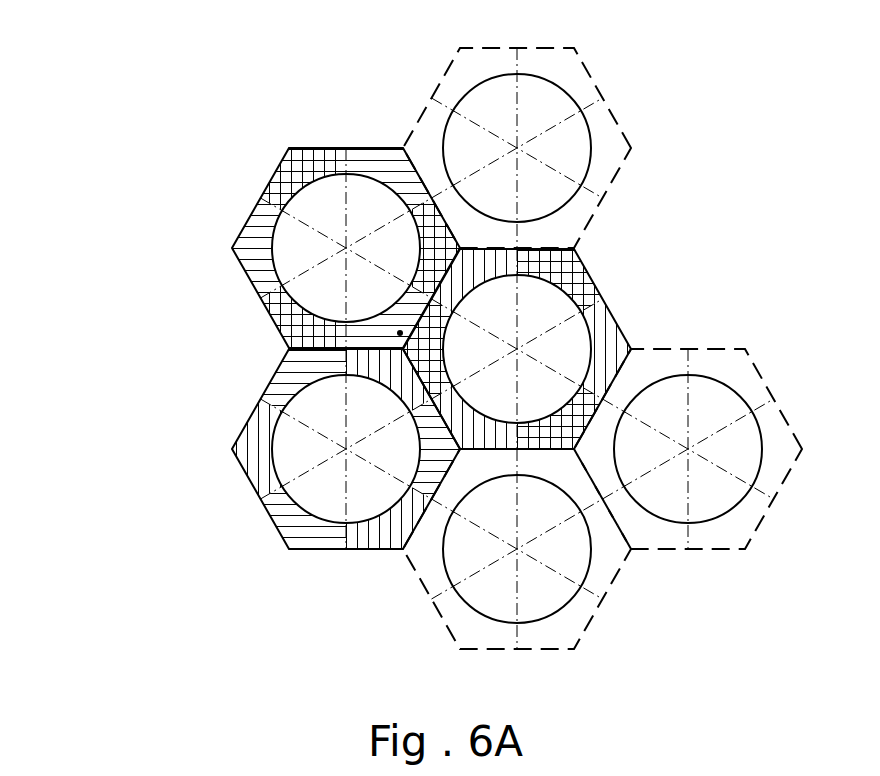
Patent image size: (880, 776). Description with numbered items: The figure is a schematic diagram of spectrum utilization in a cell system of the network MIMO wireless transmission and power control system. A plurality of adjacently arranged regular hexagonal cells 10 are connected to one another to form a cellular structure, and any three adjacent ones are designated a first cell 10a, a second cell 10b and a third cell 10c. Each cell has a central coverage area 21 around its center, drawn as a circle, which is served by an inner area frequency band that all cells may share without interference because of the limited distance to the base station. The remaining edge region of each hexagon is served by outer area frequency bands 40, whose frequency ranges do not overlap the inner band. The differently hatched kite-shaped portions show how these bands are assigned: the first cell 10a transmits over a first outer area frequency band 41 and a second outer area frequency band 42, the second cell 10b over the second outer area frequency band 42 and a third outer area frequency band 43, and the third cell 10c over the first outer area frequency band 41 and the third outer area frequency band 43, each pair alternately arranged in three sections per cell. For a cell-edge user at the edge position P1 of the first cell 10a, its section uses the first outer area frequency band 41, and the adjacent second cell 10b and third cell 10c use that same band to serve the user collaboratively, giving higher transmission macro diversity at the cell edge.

The cell 10 is at (574, 75).
The first cell 10a is at (293, 128).
The second cell 10b is at (636, 322).
The third cell 10c is at (256, 541).
The central coverage area 21 is at (315, 195).
The outer area frequency bands 40 is at (397, 348).
The first outer area frequency band 41 is at (262, 244).
The second outer area frequency band 42 is at (262, 295).
The third outer area frequency band 43 is at (482, 268).
The edge position P1 is at (437, 280).